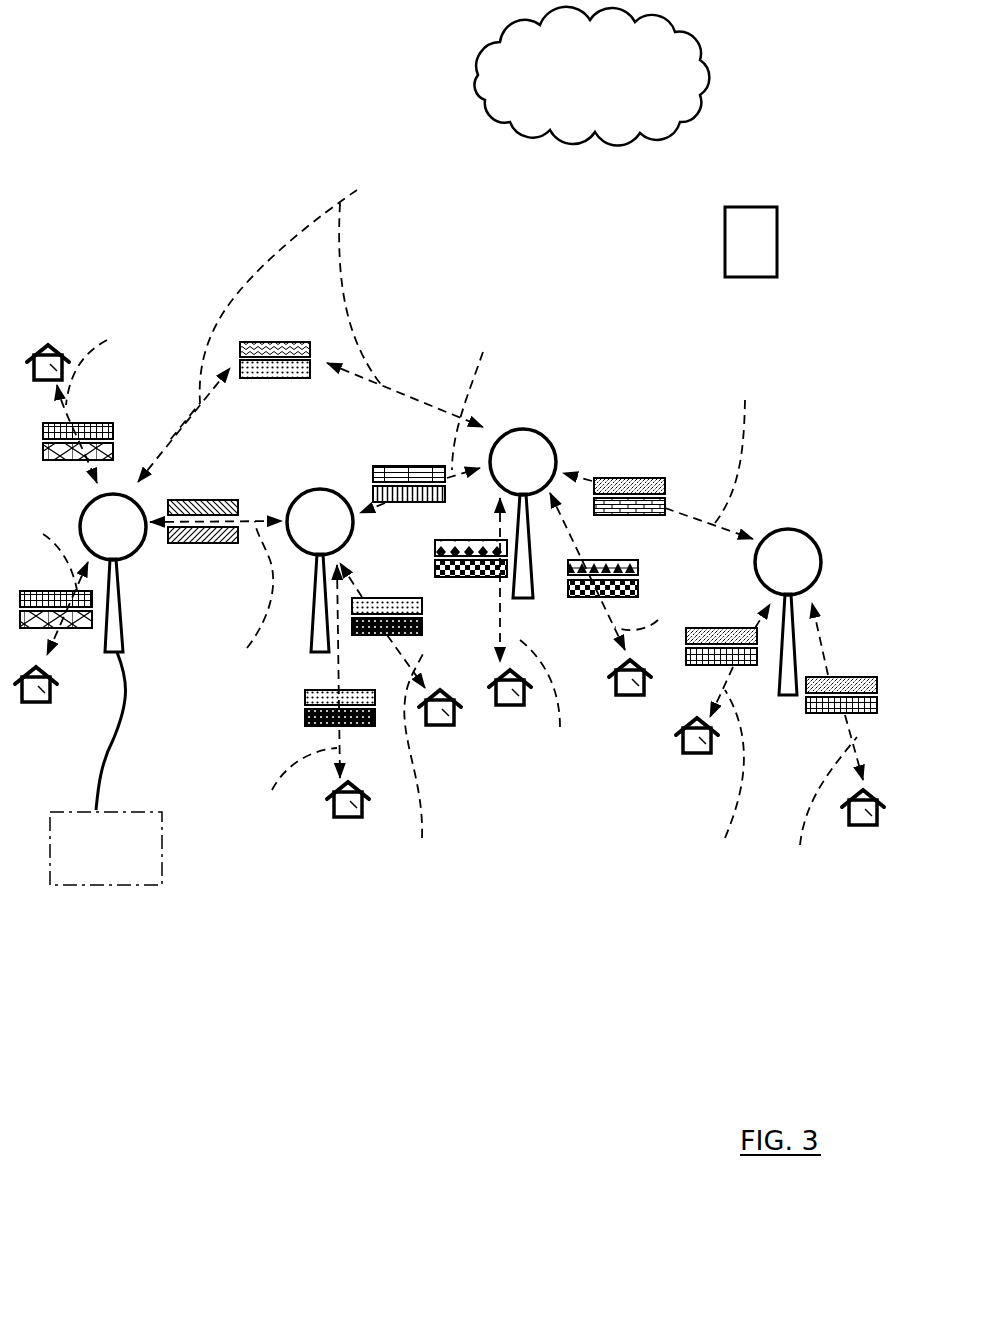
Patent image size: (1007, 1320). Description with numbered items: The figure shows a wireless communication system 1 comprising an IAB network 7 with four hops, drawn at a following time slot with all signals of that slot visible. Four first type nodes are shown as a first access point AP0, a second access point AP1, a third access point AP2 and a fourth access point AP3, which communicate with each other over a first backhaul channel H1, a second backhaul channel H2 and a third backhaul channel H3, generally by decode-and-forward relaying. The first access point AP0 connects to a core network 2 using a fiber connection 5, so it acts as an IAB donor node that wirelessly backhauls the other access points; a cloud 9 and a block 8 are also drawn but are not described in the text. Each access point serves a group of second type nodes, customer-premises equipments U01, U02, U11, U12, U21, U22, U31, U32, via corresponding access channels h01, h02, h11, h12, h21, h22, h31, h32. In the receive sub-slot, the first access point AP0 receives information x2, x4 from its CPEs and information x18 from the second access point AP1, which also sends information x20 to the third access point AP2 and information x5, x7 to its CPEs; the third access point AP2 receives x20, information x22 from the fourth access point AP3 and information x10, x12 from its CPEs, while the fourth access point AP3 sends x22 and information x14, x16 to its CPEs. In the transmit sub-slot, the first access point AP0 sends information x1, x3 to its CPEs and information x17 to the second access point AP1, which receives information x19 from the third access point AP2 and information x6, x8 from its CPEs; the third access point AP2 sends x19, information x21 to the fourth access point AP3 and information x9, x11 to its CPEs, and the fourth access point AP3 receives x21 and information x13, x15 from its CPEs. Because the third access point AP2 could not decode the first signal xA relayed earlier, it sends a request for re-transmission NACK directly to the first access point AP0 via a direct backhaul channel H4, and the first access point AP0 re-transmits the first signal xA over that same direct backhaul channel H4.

The wireless communication system 1 is at (165, 190).
The IAB network 7 is at (173, 273).
The cloud / core network 9 is at (590, 85).
The network control node 8 is at (759, 245).
The fiber connection 5 is at (125, 678).
The core network 2 is at (112, 862).
The first access point AP0 is at (141, 543).
The second access point AP1 is at (348, 538).
The third access point AP2 is at (551, 478).
The fourth access point AP3 is at (816, 578).
The second type node U01 is at (48, 346).
The second type node U02 is at (34, 702).
The second type node U11 is at (346, 817).
The second type node U12 is at (438, 725).
The second type node U21 is at (513, 705).
The second type node U22 is at (620, 695).
The second type node U31 is at (698, 753).
The second type node U32 is at (862, 825).
The access channel h01 is at (109, 361).
The access channel h02 is at (38, 552).
The access channel h11 is at (292, 786).
The access channel h12 is at (424, 764).
The access channel h21 is at (551, 700).
The access channel h22 is at (647, 610).
The access channel h31 is at (722, 781).
The access channel h32 is at (815, 811).
The first backhaul channel H1 is at (247, 600).
The second backhaul channel H2 is at (478, 397).
The third backhaul channel H3 is at (738, 444).
The direct backhaul channel H4 is at (278, 305).
The first signal xA is at (270, 342).
The request for re-transmission NACK is at (263, 378).
The information x1 is at (85, 423).
The information x2 is at (53, 461).
The information x3 is at (53, 591).
The information x4 is at (72, 629).
The information x5 is at (305, 696).
The information x6 is at (363, 726).
The information x7 is at (422, 607).
The information x8 is at (407, 635).
The information x9 is at (435, 545).
The information x10 is at (490, 577).
The information x11 is at (568, 562).
The information x12 is at (583, 597).
The information x13 is at (718, 628).
The information x14 is at (703, 666).
The information x15 is at (855, 677).
The information x16 is at (838, 714).
The information x17 is at (197, 500).
The information x18 is at (210, 543).
The information x19 is at (403, 466).
The information x20 is at (412, 502).
The information x21 is at (628, 478).
The information x22 is at (667, 503).